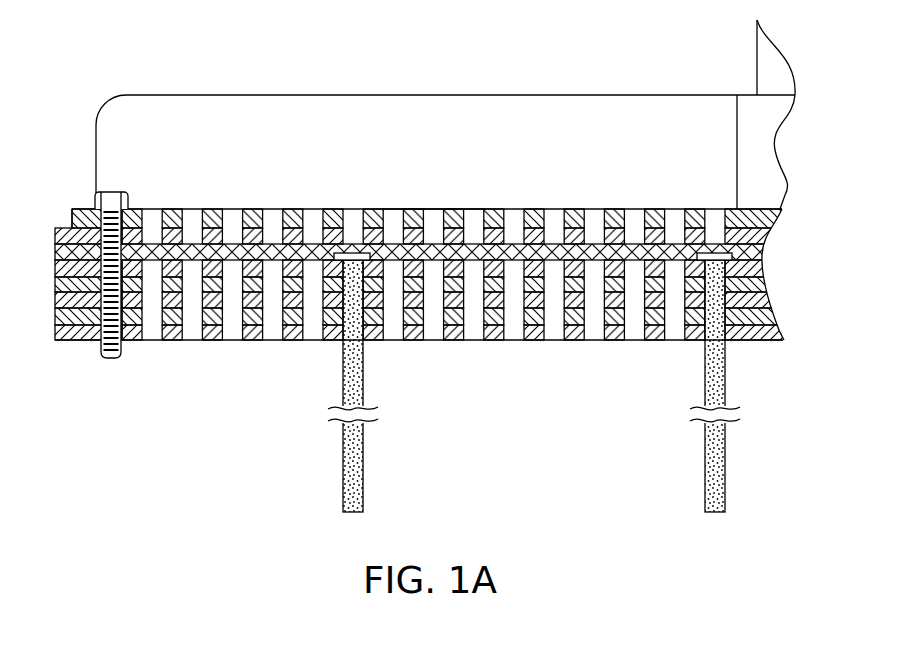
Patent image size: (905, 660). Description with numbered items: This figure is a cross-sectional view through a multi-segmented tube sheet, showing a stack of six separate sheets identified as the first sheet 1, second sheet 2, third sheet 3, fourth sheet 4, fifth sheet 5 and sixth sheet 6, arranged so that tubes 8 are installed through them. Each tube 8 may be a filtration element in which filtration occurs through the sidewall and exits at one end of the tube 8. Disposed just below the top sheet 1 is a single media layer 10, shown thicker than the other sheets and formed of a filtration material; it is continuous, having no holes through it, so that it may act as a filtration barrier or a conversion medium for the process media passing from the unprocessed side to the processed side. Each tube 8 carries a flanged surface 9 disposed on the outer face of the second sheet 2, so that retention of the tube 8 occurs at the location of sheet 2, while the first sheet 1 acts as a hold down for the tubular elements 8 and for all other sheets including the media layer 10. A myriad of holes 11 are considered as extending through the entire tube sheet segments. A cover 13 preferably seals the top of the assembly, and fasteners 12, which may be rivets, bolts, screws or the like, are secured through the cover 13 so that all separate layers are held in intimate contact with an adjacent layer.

The first sheet 1 is at (56, 227).
The second sheet 2 is at (757, 268).
The third sheet 3 is at (758, 287).
The fourth sheet 4 is at (760, 305).
The fifth sheet 5 is at (763, 320).
The sixth sheet 6 is at (758, 338).
The tube 8 is at (355, 373).
The flanged surface 9 is at (352, 250).
The media layer 10 is at (758, 252).
The holes 11 is at (392, 217).
The fastener 12 is at (112, 197).
The cover 13 is at (84, 206).